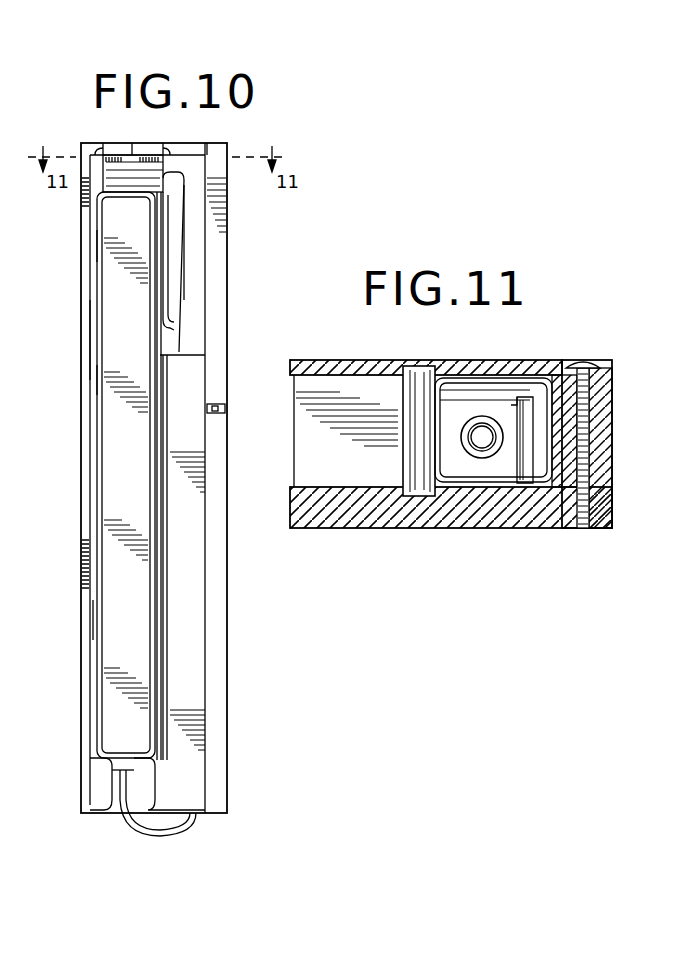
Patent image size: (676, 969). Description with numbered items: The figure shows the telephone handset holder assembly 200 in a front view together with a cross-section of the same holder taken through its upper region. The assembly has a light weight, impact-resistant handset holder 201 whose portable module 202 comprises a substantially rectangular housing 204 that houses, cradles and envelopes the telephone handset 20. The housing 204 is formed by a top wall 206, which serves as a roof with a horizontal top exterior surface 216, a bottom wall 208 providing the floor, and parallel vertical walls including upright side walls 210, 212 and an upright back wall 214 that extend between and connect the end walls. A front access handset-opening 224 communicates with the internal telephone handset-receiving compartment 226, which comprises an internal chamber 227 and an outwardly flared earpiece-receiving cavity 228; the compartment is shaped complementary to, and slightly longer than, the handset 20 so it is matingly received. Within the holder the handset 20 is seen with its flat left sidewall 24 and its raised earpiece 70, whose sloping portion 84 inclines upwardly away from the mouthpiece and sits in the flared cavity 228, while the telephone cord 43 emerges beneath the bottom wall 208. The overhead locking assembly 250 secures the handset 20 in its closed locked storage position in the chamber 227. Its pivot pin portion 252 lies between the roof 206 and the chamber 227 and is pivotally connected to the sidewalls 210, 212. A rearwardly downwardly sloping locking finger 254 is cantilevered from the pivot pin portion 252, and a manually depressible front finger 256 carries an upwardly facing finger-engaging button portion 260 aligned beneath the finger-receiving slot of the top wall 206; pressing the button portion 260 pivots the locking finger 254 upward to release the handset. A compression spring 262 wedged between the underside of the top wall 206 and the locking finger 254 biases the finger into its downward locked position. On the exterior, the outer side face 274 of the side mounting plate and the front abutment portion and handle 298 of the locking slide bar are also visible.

In FIG. 10, the telephone handset 20 is at (118, 300).
In FIG. 10, the left sidewall 24 is at (112, 458).
In FIG. 10, the telephone cord 43 is at (172, 835).
In FIG. 10, the raised earpiece 70 is at (11, 277).
In FIG. 10, the sloping portion 84 is at (180, 255).
In FIG. 10, the telephone handset holder assembly 200 is at (108, 120).
In FIG. 11, the telephone handset holder assembly 200 is at (317, 358).
In FIG. 10, the handset holder 201 is at (81, 224).
In FIG. 10, the portable module 202 is at (81, 340).
In FIG. 10, the housing 204 is at (138, 150).
In FIG. 10, the top wall 206 is at (200, 143).
In FIG. 10, the bottom wall 208 is at (96, 813).
In FIG. 10, the upright side wall 210 is at (81, 541).
In FIG. 11, the upright side wall 210 is at (478, 360).
In FIG. 10, the upright side wall 212 is at (207, 672).
In FIG. 11, the upright side wall 212 is at (470, 529).
In FIG. 10, the upright back wall 214 is at (19, 195).
In FIG. 11, the upright back wall 214 is at (612, 452).
In FIG. 10, the horizontal top exterior surface 216 is at (17, 118).
In FIG. 10, the front access handset-opening 224 is at (98, 246).
In FIG. 10, the internal telephone handset-receiving compartment 226 is at (97, 380).
In FIG. 10, the internal chamber 227 is at (92, 620).
In FIG. 10, the outwardly flared earpiece-receiving cavity 228 is at (190, 306).
In FIG. 11, the overhead locking assembly 250 is at (322, 391).
In FIG. 11, the pivot pin portion 252 is at (416, 378).
In FIG. 11, the locking finger 254 is at (522, 475).
In FIG. 11, the front finger 256 is at (370, 470).
In FIG. 11, the finger-engaging button portion 260 is at (310, 453).
In FIG. 11, the compression spring 262 is at (494, 428).
In FIG. 10, the outer side face 274 is at (218, 622).
In FIG. 10, the front abutment portion and handle 298 is at (218, 413).